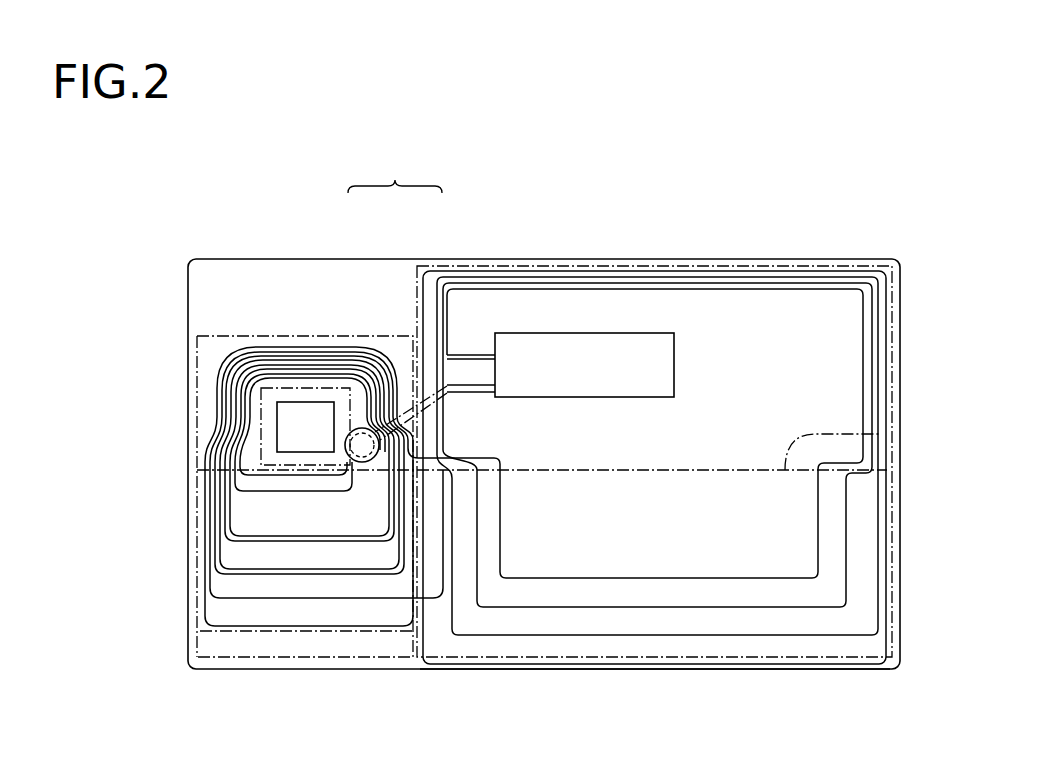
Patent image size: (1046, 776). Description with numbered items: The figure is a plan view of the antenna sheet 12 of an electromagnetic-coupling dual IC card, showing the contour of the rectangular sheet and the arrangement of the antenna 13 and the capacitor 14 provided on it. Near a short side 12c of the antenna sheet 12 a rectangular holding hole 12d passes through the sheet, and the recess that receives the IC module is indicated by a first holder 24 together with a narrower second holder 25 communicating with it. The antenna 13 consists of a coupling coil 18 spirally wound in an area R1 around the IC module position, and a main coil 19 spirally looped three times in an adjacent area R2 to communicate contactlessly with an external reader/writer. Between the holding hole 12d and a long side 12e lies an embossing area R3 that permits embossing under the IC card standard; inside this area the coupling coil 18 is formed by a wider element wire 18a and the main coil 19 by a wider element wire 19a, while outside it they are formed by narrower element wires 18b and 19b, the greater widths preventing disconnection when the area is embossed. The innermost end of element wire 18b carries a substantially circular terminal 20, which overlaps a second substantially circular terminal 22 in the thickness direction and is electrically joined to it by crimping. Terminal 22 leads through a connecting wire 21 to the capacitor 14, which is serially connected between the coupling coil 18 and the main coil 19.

The antenna sheet 12 is at (266, 260).
The short side 12c is at (190, 463).
The holding hole 12d is at (236, 487).
The long side 12e is at (472, 672).
The second holder 25 is at (303, 452).
The antenna 13 is at (395, 172).
The capacitor 14 is at (597, 338).
The coupling coil 18 is at (505, 455).
The element wire 18a is at (259, 585).
The element wire 18b is at (268, 340).
The main coil 19 is at (647, 457).
The element wire 19a is at (745, 625).
The element wire 19b is at (724, 288).
The terminal 20 is at (357, 428).
The connecting wire 21 is at (472, 388).
The terminal 22 is at (362, 455).
The first holder 24 is at (262, 425).
The area R1 is at (228, 336).
The area R2 is at (837, 262).
The embossing area R3 is at (880, 434).